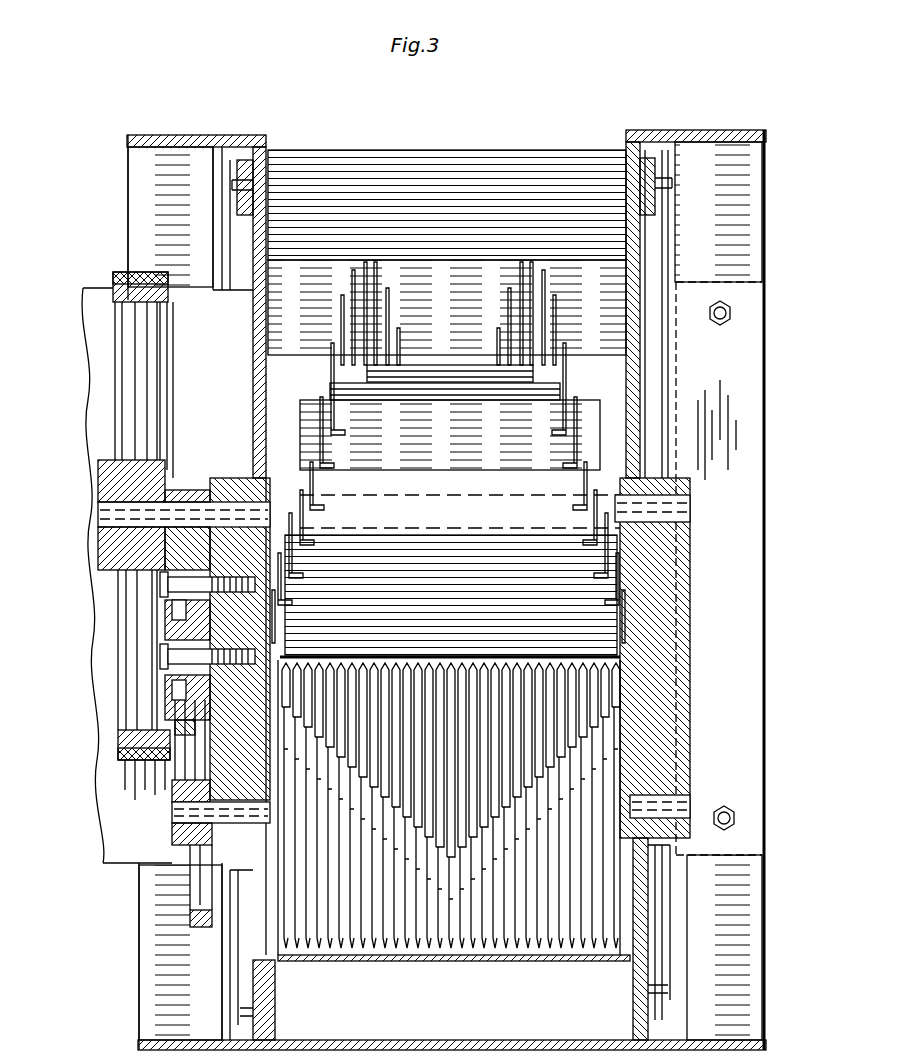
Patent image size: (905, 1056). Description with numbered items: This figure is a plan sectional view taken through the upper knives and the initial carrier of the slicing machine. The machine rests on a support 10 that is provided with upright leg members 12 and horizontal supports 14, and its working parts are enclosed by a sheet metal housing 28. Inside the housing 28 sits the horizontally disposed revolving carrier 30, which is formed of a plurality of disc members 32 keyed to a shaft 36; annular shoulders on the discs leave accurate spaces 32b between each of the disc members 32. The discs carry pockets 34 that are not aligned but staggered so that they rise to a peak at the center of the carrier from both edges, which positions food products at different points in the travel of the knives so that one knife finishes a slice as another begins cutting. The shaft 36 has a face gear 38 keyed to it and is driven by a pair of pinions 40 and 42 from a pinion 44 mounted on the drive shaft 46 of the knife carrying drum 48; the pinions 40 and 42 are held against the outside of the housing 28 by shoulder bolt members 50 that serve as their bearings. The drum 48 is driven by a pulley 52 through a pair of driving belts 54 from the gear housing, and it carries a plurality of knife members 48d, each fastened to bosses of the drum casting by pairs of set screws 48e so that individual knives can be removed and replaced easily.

The support 10 is at (745, 568).
The upright leg member 12 is at (226, 140).
The horizontal support 14 is at (158, 152).
The sheet metal housing 28 is at (258, 357).
The revolving carrier 30 is at (490, 962).
The disc member 32 is at (600, 752).
The space 32b is at (358, 948).
The pocket 34 is at (590, 690).
The shaft 36 is at (180, 812).
The face gear 38 is at (190, 915).
The pinion 40 is at (210, 688).
The pinion 42 is at (165, 608).
The pinion 44 is at (198, 478).
The drive shaft 46 is at (105, 512).
The knife carrying drum 48 is at (450, 511).
The knife member 48d is at (498, 345).
The set screw 48e is at (335, 430).
The shoulder bolt member 50 is at (165, 594).
The pulley 52 is at (137, 302).
The driving belt 54 is at (158, 272).